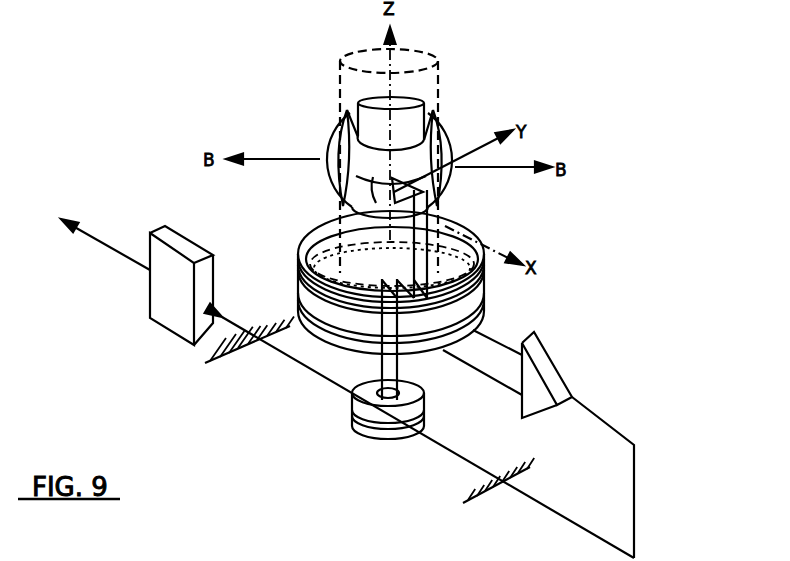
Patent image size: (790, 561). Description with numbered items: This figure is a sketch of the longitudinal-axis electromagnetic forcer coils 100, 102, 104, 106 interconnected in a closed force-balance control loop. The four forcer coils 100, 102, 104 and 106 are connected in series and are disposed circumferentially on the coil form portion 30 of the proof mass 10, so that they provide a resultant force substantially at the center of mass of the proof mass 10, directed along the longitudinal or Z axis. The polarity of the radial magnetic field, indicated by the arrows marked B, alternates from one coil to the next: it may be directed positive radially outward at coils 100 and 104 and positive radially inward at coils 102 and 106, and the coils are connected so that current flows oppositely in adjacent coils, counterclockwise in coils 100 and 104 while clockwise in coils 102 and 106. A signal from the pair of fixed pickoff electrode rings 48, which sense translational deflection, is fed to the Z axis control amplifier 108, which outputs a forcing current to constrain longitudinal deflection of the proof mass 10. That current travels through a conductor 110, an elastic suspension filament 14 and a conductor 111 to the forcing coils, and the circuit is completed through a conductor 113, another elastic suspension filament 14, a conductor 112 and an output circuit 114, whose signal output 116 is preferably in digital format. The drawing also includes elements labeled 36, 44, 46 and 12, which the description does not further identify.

The proof mass 10 is at (337, 70).
The coil form portion 30 is at (440, 103).
The forcer coil 100 is at (445, 185).
The forcer coil 102 is at (390, 177).
The forcer coil 104 is at (336, 153).
The forcer coil 106 is at (400, 102).
The fixed pickoff electrode rings 48 is at (332, 236).
The support ring 36 is at (292, 307).
The conductor 111 is at (400, 370).
The conductor 113 is at (381, 370).
The pulley 44 is at (414, 390).
The pulley disc 46 is at (365, 427).
The elastic suspension filament 14 is at (292, 360).
The conductor 110 is at (635, 487).
The Z axis control amplifier 108 is at (551, 375).
The ground 12 is at (240, 358).
The output circuit 114 is at (188, 314).
The signal output 116 is at (121, 262).
The conductor 112 is at (222, 300).